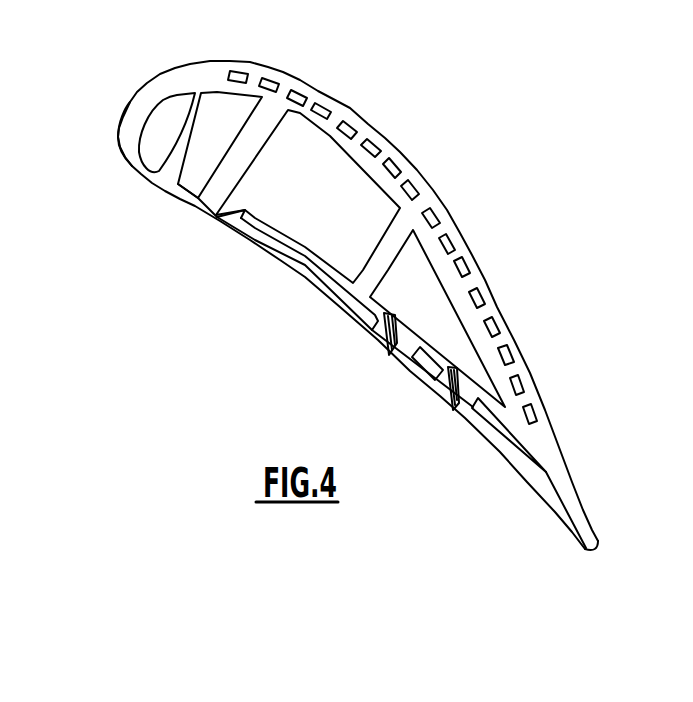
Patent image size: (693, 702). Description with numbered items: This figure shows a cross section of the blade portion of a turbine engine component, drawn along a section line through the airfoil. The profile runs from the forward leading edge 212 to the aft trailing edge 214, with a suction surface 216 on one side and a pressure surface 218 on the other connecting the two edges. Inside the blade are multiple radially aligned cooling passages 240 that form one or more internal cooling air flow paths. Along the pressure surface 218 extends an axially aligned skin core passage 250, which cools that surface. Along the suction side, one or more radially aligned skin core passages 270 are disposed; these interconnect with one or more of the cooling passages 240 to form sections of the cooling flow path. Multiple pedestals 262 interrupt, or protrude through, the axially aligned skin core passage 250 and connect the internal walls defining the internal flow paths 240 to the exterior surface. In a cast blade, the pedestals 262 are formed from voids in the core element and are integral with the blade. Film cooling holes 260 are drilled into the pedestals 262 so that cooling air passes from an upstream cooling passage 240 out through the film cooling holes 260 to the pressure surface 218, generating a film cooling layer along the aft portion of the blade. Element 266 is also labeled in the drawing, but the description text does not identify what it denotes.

The leading edge 212 is at (119, 137).
The trailing edge 214 is at (598, 547).
The suction surface 216 is at (321, 90).
The pressure surface 218 is at (247, 245).
The cooling passages 240 is at (500, 259).
The axially aligned skin core passage 250 is at (312, 279).
The film cooling holes 260 is at (388, 355).
The pedestals 262 is at (378, 392).
The pedestal 266 is at (455, 410).
The radially aligned skin core passages 270 is at (398, 166).